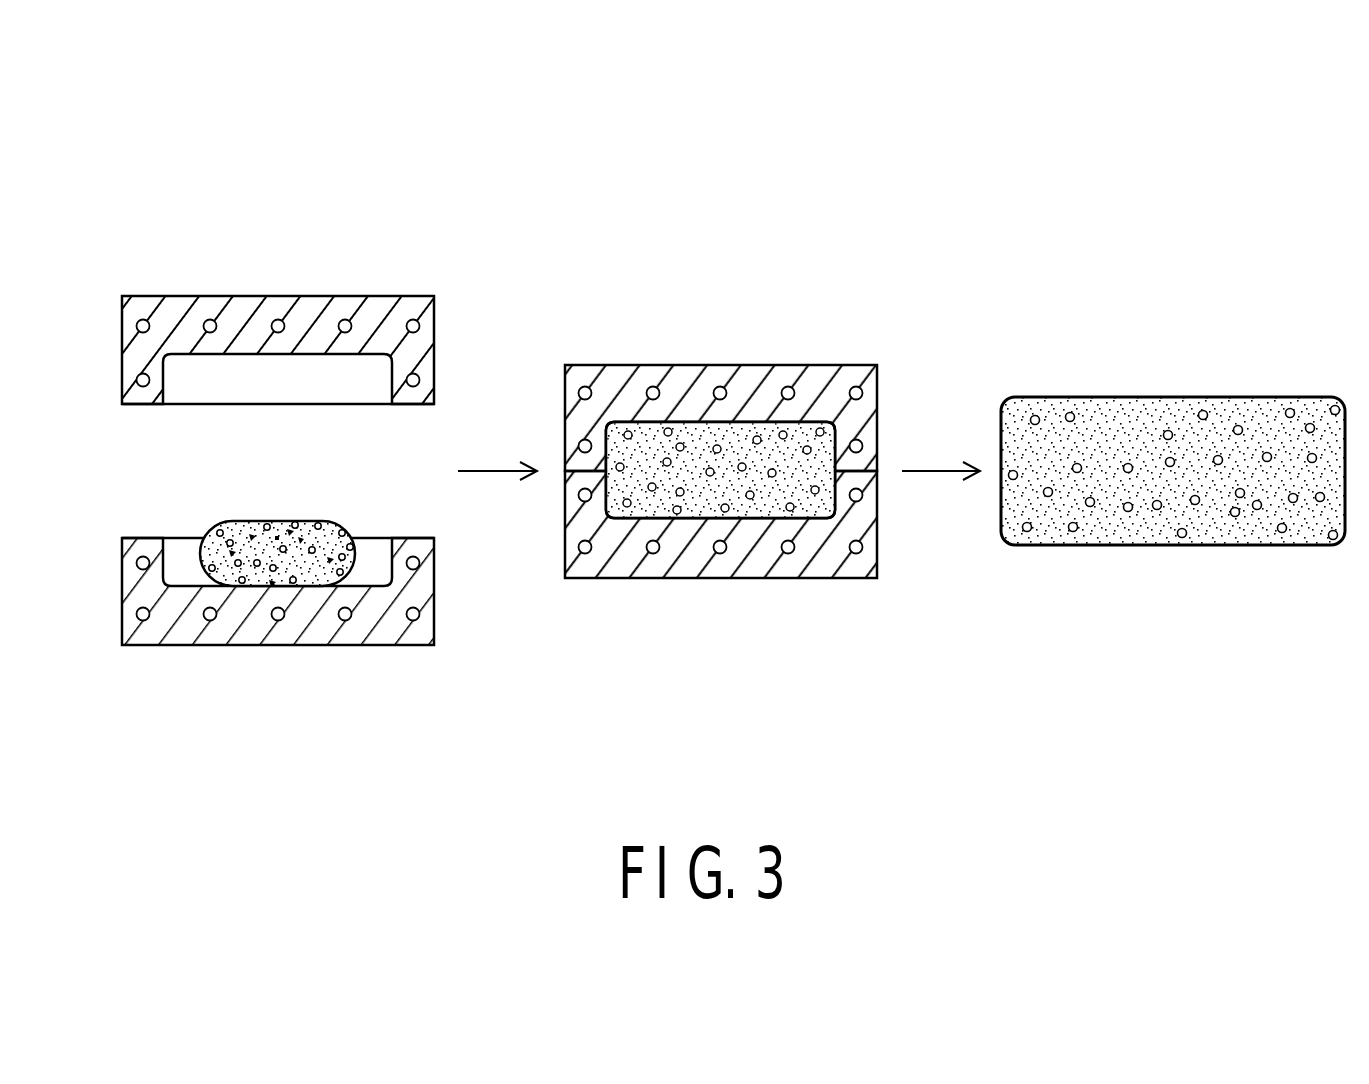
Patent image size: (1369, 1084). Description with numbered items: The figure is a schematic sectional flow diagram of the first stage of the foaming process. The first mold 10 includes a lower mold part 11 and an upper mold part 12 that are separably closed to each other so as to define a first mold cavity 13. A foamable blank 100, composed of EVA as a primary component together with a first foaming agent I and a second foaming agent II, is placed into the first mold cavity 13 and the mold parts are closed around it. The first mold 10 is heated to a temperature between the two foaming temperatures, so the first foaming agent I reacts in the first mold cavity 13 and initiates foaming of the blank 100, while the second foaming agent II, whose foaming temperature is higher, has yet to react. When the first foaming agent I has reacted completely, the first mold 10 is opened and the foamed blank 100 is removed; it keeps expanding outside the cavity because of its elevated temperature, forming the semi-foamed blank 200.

The first mold 10 is at (481, 449).
The lower mold part 11 is at (282, 647).
The upper mold part 12 is at (208, 296).
The first mold cavity 13 is at (819, 520).
The foamable blank 100 is at (228, 512).
The semi-foamed blank 200 is at (1225, 378).
The first foaming agent I is at (278, 538).
The second foaming agent II is at (313, 550).